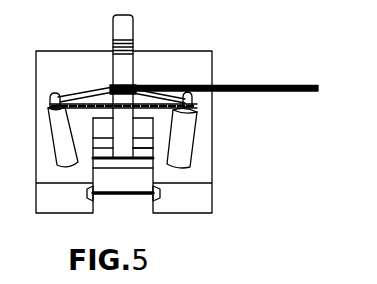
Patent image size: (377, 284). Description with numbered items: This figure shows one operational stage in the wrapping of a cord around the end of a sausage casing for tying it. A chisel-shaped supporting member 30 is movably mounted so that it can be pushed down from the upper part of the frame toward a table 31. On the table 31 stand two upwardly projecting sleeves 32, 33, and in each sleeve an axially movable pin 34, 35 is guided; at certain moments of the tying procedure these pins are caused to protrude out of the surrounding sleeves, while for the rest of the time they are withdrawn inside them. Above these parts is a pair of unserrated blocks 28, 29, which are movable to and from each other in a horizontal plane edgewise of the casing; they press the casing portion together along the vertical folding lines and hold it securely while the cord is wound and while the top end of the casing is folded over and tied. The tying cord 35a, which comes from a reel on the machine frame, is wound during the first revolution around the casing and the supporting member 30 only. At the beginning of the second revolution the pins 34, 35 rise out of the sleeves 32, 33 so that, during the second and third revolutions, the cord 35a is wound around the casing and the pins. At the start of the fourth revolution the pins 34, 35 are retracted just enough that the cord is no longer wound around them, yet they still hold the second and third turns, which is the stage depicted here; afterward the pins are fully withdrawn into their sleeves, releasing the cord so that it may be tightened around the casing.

The block 28 is at (129, 187).
The block 29 is at (155, 155).
The supporting member 30 is at (134, 24).
The table 31 is at (43, 173).
The sleeve 32 is at (58, 137).
The sleeve 33 is at (190, 129).
The pin 34 is at (50, 100).
The pin 35 is at (192, 100).
The tying cord 35a is at (242, 87).